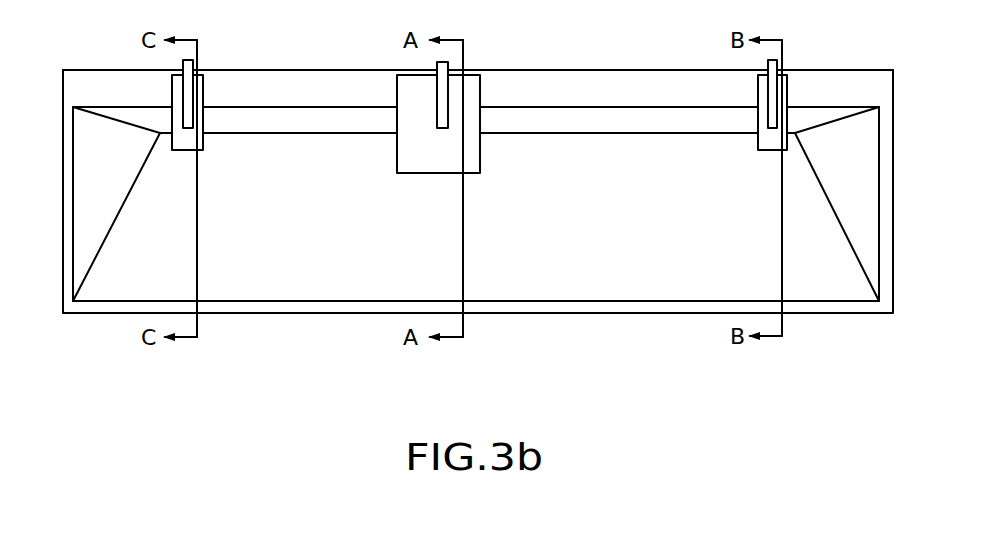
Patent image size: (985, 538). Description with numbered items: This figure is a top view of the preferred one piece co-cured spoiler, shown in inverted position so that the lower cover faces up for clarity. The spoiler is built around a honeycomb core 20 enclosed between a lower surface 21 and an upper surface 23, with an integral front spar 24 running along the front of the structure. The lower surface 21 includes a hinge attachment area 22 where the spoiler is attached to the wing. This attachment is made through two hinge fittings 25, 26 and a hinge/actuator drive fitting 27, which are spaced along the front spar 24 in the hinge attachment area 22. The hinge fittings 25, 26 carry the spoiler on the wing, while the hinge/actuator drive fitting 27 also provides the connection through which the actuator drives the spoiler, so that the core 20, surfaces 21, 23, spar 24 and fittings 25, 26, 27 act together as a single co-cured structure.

The honeycomb core 20 is at (870, 152).
The lower surface 21 is at (552, 217).
The hinge attachment area 22 is at (609, 135).
The upper surface 23 is at (882, 85).
The integral front spar 24 is at (293, 117).
The hinge fitting 25 is at (777, 117).
The hinge fitting 26 is at (440, 117).
The hinge/actuator drive fitting 27 is at (188, 90).